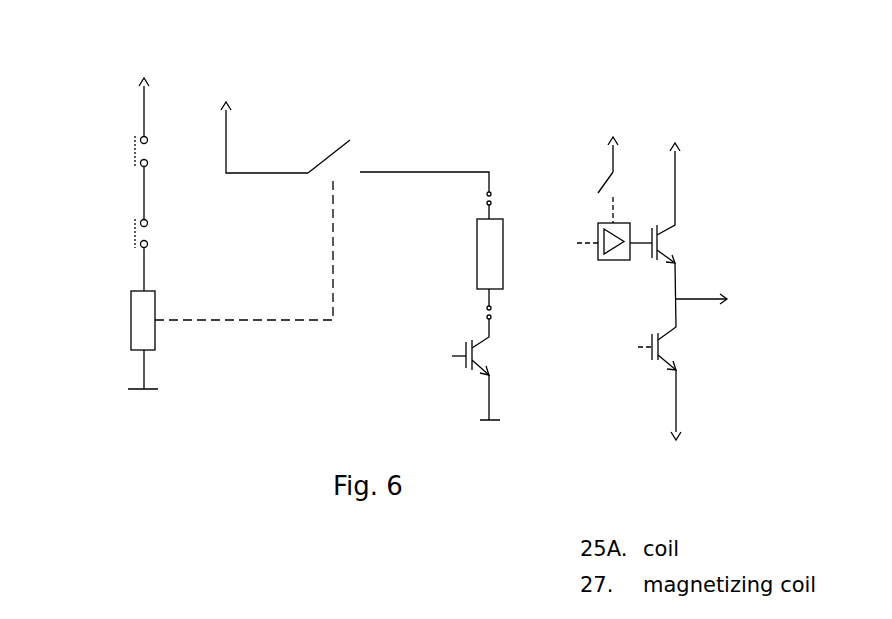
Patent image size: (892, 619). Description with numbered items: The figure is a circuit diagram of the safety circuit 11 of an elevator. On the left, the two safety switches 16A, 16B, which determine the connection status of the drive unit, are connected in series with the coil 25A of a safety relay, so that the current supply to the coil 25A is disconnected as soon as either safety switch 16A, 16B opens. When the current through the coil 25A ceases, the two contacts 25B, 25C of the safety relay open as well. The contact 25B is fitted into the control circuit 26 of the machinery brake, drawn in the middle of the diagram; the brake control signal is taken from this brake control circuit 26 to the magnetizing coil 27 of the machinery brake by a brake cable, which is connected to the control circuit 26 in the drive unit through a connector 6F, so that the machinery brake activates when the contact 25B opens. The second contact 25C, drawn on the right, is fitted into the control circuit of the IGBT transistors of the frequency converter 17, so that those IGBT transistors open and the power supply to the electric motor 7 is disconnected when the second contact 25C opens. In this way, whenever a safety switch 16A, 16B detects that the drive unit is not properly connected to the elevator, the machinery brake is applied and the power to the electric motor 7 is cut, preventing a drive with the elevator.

The safety circuit 11 is at (188, 87).
The safety switch 16A is at (131, 150).
The safety switch 16B is at (131, 241).
The coil of the safety relay 25A is at (131, 319).
The contact of the safety relay 25B is at (337, 150).
The second contact of the safety relay 25C is at (605, 180).
The control circuit of the machinery brake 26 is at (417, 143).
The connector 6F is at (485, 197).
The magnetizing coil 27 is at (477, 251).
The frequency converter 17 is at (690, 272).
The electric motor 7 is at (711, 299).